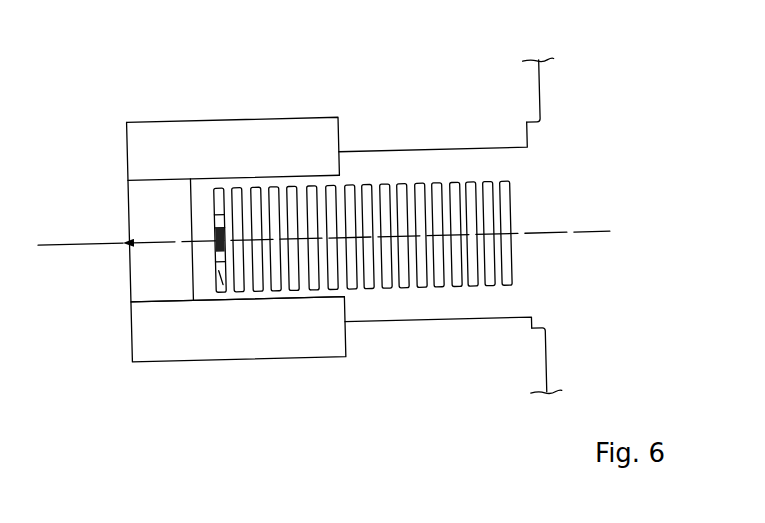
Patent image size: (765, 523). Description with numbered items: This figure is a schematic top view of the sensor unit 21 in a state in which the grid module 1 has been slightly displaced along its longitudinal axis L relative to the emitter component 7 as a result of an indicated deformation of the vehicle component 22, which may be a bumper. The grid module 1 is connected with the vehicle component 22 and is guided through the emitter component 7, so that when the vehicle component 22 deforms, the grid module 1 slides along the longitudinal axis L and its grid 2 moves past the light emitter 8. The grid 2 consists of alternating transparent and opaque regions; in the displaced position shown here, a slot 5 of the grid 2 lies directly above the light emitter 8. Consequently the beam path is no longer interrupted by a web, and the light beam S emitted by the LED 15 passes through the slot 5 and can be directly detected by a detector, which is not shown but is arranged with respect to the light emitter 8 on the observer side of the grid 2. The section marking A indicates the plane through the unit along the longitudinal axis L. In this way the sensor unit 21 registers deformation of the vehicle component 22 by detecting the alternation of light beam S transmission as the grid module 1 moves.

The grid module 1 is at (437, 148).
The grid 2 is at (409, 176).
The slot 5 is at (222, 285).
The emitter component 7 is at (197, 118).
The light emitter 8 is at (214, 226).
The LED 15 is at (217, 238).
The sensor unit 21 is at (118, 80).
The vehicle component 22 is at (530, 177).
The light beam S is at (214, 254).
The longitudinal axis L is at (25, 247).
The section line A- A is at (97, 250).